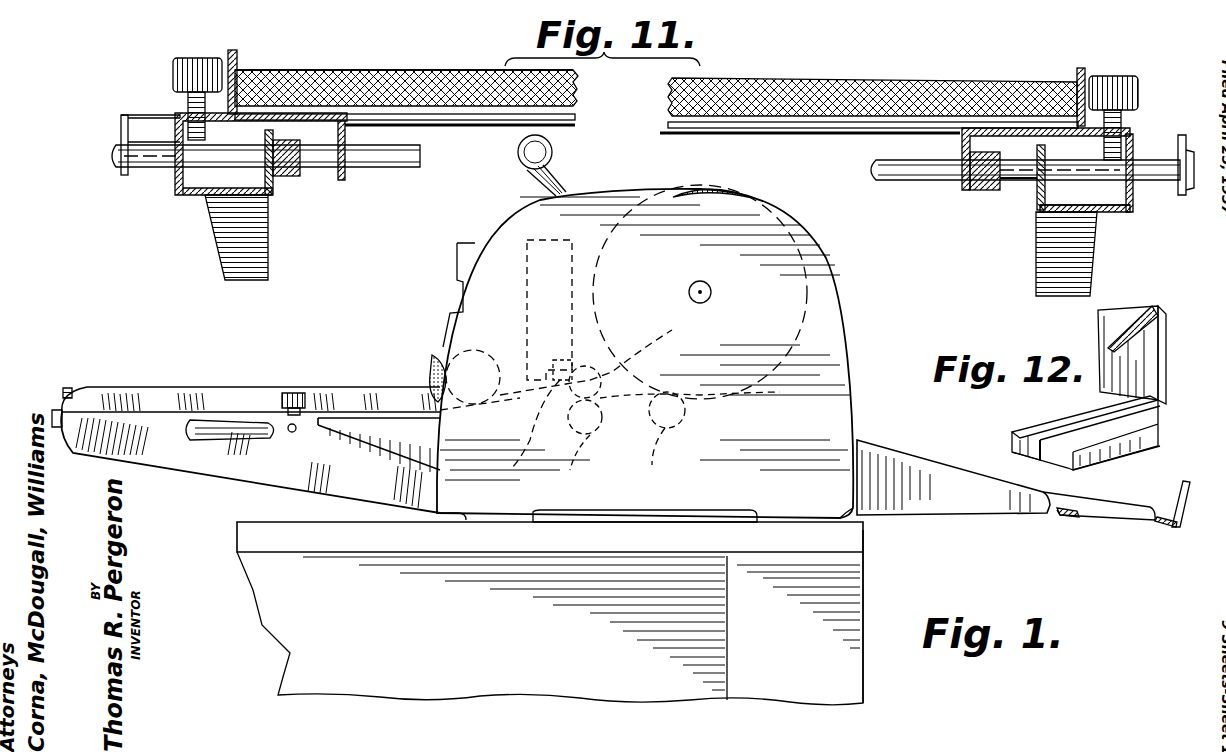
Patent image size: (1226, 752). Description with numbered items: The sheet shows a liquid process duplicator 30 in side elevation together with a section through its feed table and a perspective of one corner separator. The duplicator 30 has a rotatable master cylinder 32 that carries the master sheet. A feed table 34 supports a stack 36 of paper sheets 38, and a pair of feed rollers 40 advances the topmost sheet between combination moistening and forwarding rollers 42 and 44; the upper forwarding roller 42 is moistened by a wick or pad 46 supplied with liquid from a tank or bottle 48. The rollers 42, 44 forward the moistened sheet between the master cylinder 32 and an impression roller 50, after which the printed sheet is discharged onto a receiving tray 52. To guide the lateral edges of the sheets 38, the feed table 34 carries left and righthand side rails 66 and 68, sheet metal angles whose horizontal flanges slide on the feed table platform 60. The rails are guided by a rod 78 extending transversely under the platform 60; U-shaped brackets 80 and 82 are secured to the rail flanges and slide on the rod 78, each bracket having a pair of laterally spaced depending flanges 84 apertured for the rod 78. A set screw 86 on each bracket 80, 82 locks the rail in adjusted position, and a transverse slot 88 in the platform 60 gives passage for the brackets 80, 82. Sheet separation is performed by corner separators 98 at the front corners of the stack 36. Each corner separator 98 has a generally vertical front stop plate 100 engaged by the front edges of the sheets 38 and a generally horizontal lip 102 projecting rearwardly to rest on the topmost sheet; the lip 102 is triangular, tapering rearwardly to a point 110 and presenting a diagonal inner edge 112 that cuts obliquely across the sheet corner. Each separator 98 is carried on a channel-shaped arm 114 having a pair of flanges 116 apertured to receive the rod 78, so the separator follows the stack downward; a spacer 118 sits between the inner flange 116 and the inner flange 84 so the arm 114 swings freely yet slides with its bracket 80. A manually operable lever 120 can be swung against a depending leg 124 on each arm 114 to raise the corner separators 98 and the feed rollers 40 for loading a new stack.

In FIG. 1, the duplicator 30 is at (855, 320).
In FIG. 1, the master drum or cylinder 32 is at (740, 194).
In FIG. 11, the feed table 34 is at (108, 110).
In FIG. 1, the feed table 34 is at (90, 455).
In FIG. 11, the stack 36 is at (318, 70).
In FIG. 1, the stack 36 is at (68, 386).
In FIG. 11, the paper sheets 38 is at (418, 82).
In FIG. 1, the feed rollers 40 is at (432, 372).
In FIG. 1, the upper forwarding roller 42 is at (700, 292).
In FIG. 1, the lower forwarding roller 44 is at (584, 425).
In FIG. 1, the wick or pad 46 is at (556, 406).
In FIG. 1, the tank or bottle 48 is at (527, 300).
In FIG. 1, the impression roller 50 is at (690, 437).
In FIG. 1, the extension table 52 is at (1000, 516).
In FIG. 11, the feed table platform 60 is at (588, 127).
In FIG. 11, the lefthand side rail 66 is at (246, 52).
In FIG. 11, the righthand side rail 68 is at (1068, 67).
In FIG. 11, the rod 78 is at (422, 160).
In FIG. 11, the U-shaped bracket 80 is at (1133, 140).
In FIG. 11, the U-shaped bracket 82 is at (180, 115).
In FIG. 11, the depending lugs or flanges 84 is at (180, 185).
In FIG. 11, the set screw 86 is at (175, 66).
In FIG. 1, the set screw 86 is at (296, 392).
In FIG. 11, the slot 88 is at (752, 130).
In FIG. 12, the corner separator 98 is at (1113, 378).
In FIG. 12, the front stop plate 100 is at (1098, 352).
In FIG. 12, the lip 102 is at (1160, 350).
In FIG. 12, the point 110 is at (1160, 412).
In FIG. 12, the diagonal inner edge 112 is at (1132, 316).
In FIG. 11, the arm 114 is at (192, 197).
In FIG. 12, the arm 114 is at (1094, 452).
In FIG. 11, the flanges 116 is at (1012, 245).
In FIG. 11, the spacer 118 is at (318, 178).
In FIG. 1, the control member 120 is at (208, 445).
In FIG. 11, the depending flange or leg 124 is at (260, 245).